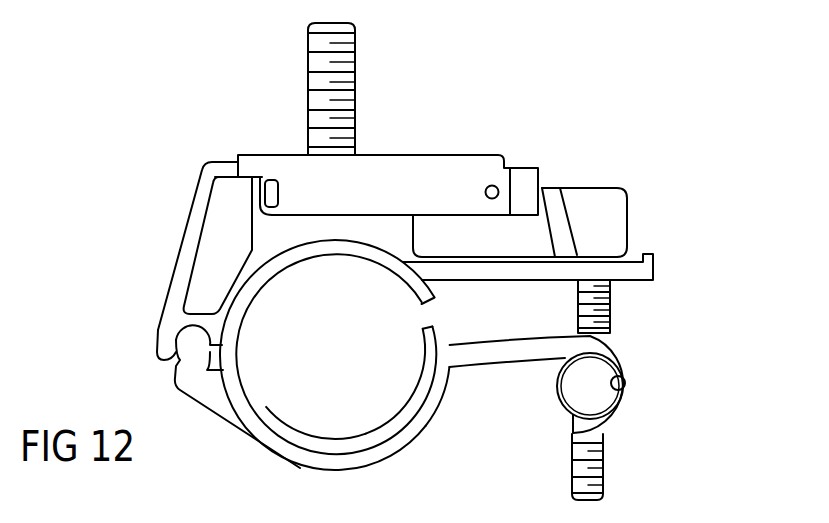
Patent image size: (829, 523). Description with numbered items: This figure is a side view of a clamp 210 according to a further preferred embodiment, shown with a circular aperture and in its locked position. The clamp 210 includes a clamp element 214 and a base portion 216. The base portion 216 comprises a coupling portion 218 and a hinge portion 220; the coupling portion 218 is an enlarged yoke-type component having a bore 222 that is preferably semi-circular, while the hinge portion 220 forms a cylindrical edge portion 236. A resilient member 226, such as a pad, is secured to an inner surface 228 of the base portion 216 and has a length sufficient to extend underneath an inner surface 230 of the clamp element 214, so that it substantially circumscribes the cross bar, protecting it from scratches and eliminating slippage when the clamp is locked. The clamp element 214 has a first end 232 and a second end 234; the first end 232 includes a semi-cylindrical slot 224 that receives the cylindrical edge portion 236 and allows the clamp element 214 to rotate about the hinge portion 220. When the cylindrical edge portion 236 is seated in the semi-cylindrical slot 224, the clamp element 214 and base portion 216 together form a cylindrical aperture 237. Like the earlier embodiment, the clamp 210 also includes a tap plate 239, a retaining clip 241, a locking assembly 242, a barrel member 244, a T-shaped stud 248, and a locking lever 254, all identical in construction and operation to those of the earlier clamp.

The clamp 210 is at (112, 224).
The clamp element 214 is at (186, 204).
The base portion 216 is at (387, 480).
The coupling portion 218 is at (620, 414).
The hinge portion 220 is at (197, 383).
The bore 222 is at (621, 384).
The semi-cylindrical slot 224 is at (226, 347).
The resilient member 226 is at (369, 435).
The inner surface of the base portion 228 is at (412, 401).
The inner surface of the clamp element 230 is at (362, 252).
The first end 232 is at (168, 303).
The second end 234 is at (656, 270).
The cylindrical edge portion 236 is at (186, 340).
The cylindrical aperture 237 is at (290, 407).
The tap plate 239 is at (357, 58).
The retaining clip 241 is at (453, 182).
The locking assembly 242 is at (633, 303).
The barrel member 244 is at (578, 390).
The T-shaped stud 248 is at (580, 291).
The locking lever 254 is at (630, 164).